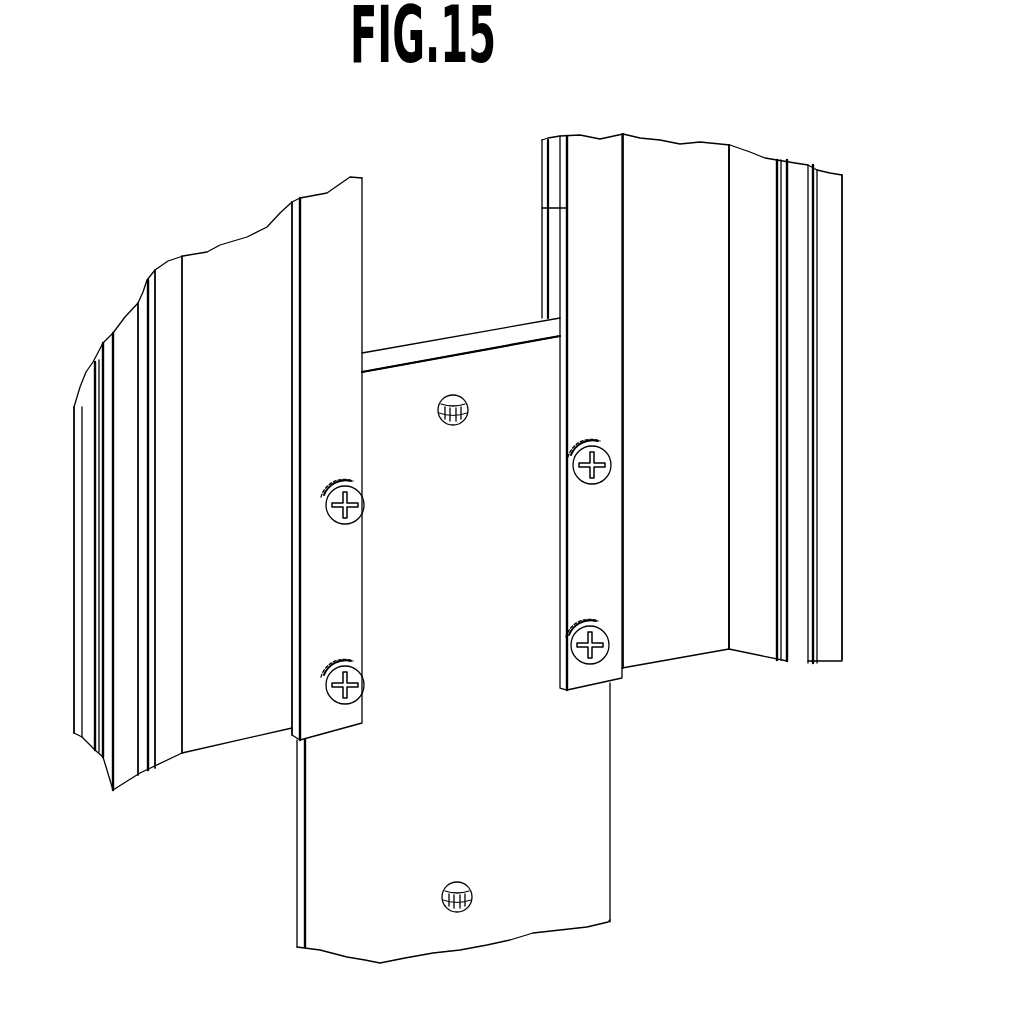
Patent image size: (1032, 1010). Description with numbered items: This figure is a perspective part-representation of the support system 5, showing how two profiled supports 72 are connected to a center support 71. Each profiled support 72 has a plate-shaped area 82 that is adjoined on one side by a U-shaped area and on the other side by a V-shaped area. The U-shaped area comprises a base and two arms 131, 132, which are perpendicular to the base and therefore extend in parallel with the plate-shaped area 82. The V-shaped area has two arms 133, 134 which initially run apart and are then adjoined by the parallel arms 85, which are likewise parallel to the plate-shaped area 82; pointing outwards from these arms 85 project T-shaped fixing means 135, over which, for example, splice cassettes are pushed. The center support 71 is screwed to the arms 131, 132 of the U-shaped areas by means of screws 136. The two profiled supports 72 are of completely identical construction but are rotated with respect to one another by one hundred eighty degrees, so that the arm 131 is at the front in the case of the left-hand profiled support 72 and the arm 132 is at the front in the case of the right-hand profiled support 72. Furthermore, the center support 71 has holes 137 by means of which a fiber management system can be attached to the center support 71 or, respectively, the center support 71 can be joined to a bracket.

The cabinet 5 is at (724, 101).
The center support 71 is at (588, 789).
The profiled support 72 is at (231, 806).
The plate-shaped area 82 is at (237, 722).
The parallel arms 85 is at (142, 768).
The arm 131 is at (312, 204).
The arm 132 is at (565, 208).
The arm 133 is at (163, 747).
The arm 134 is at (753, 640).
The T-shaped fixing means 135 is at (117, 780).
The screws 136 is at (570, 462).
The holes 137 is at (447, 398).